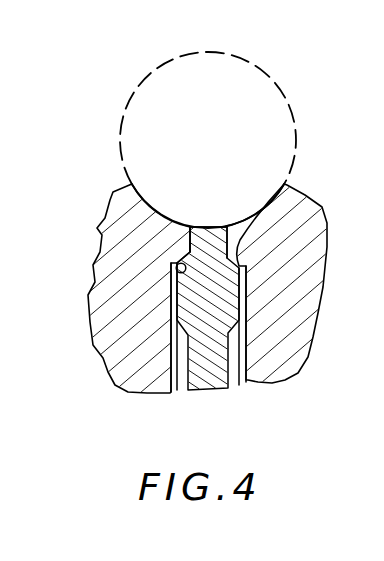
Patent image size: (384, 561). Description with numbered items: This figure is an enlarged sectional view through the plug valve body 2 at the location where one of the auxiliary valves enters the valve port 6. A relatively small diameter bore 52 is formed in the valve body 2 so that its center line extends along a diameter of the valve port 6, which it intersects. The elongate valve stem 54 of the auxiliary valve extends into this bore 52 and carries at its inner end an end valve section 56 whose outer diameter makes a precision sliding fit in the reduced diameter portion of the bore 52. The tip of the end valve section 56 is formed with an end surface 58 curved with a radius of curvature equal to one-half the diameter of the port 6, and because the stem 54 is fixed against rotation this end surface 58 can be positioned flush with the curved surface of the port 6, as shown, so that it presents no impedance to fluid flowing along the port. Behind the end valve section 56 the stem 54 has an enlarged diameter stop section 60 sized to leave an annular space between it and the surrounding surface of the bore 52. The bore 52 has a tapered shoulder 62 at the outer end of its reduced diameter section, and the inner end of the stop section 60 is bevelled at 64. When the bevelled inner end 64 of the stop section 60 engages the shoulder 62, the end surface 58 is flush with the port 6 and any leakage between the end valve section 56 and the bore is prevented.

The plug valve body 2 is at (229, 277).
The valve port 6 is at (263, 207).
The bore 52 is at (242, 370).
The valve stem 54 is at (203, 364).
The end valve section 56 is at (203, 240).
The end surface 58 is at (207, 226).
The stop section 60 is at (193, 292).
The tapered shoulder 62 is at (182, 266).
The bevelled inner end 64 is at (237, 243).